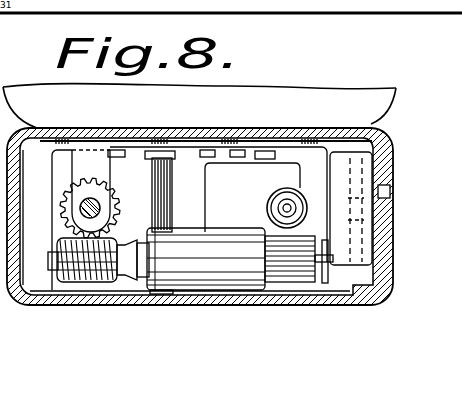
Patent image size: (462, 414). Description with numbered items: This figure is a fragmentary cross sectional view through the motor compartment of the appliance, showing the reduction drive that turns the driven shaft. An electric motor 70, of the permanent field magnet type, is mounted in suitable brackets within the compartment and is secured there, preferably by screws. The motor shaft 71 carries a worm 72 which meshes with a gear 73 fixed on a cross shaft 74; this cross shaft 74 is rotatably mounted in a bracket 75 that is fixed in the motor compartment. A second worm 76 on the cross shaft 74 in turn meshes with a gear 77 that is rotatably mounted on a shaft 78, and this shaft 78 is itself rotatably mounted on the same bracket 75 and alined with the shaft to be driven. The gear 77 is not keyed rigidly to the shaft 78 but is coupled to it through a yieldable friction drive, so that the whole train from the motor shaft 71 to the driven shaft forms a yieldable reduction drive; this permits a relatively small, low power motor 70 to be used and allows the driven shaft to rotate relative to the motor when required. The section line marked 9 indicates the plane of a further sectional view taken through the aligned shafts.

The electric motor 70 is at (287, 167).
The motor shaft 71 is at (282, 204).
The worm 72 is at (292, 200).
The gear 73 is at (268, 230).
The cross shaft 74 is at (212, 232).
The bracket 75 is at (228, 146).
The worm 76 is at (70, 283).
The gear 77 is at (60, 210).
The shaft 78 is at (94, 205).
The section line 9- 9 is at (90, 98).